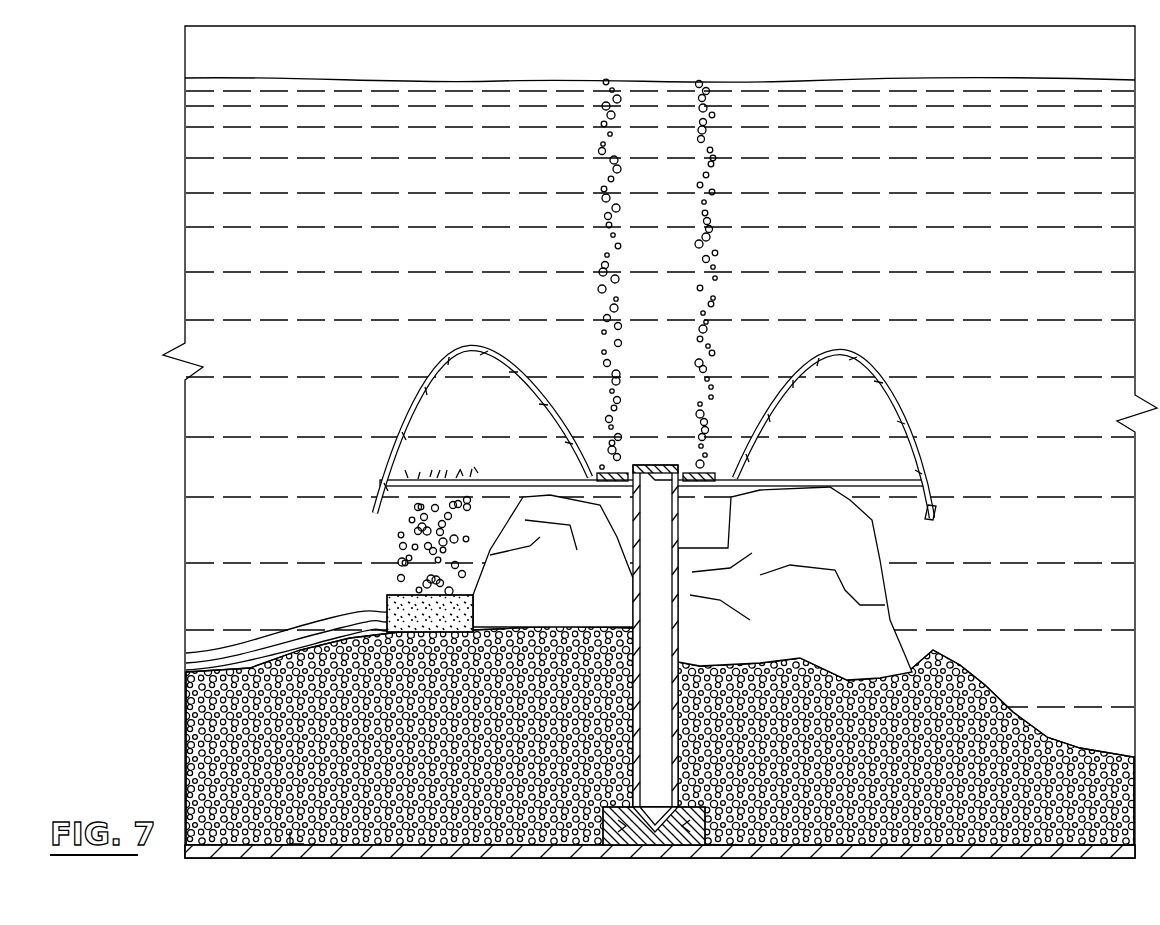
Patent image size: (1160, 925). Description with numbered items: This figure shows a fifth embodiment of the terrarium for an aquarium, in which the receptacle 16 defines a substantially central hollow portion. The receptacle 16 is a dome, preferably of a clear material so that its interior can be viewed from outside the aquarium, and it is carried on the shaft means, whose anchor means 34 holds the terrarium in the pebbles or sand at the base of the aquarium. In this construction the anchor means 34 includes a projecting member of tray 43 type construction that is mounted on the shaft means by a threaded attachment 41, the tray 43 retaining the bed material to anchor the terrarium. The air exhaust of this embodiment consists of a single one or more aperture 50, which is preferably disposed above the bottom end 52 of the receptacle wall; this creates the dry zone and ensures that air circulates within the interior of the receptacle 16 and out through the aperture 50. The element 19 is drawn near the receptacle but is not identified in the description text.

The dome canopy 16 is at (903, 398).
The plate 19 is at (928, 473).
The canopy rim 52 is at (938, 514).
The nozzle 50 is at (612, 463).
The gravel substrate 34 is at (718, 798).
The gravel bed 43 is at (853, 840).
The anchor base 41 is at (663, 836).